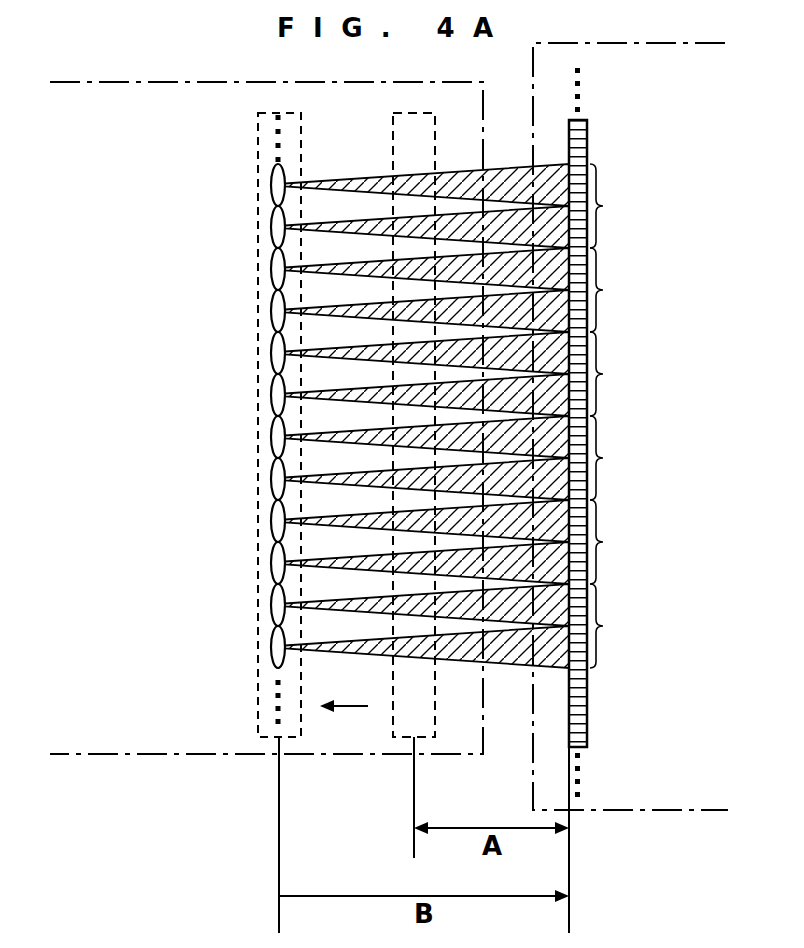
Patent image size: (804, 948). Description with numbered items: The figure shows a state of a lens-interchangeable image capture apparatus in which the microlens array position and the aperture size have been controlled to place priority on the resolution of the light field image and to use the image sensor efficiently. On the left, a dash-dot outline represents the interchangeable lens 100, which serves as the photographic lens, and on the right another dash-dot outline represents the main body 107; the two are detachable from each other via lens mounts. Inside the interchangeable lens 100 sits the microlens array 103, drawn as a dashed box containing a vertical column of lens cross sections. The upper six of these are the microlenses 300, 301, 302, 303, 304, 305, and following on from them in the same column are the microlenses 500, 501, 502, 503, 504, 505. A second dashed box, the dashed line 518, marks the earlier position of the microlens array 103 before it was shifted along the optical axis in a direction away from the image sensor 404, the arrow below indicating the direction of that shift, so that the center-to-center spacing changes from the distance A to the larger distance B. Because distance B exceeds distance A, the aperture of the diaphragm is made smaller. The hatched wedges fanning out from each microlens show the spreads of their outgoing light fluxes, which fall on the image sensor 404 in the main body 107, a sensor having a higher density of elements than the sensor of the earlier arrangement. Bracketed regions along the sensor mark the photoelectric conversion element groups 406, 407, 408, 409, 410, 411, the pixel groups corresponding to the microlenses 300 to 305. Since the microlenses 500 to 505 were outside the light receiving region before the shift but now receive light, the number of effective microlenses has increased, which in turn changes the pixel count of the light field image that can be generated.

The interchangeable lens 100 is at (163, 757).
The main body 107 is at (670, 813).
The microlens array 103 is at (258, 125).
The dashed line 518 is at (393, 128).
The microlens 300 is at (272, 177).
The microlens 301 is at (272, 219).
The microlens 302 is at (272, 261).
The microlens 303 is at (272, 303).
The microlens 304 is at (272, 345).
The microlens 305 is at (272, 387).
The microlens 500 is at (272, 429).
The microlens 501 is at (272, 471).
The microlens 502 is at (272, 513).
The microlens 503 is at (272, 555).
The microlens 504 is at (272, 597).
The microlens 505 is at (272, 639).
The image sensor 404 is at (588, 141).
The photoelectric conversion element group 406 is at (628, 206).
The photoelectric conversion element group 407 is at (628, 290).
The photoelectric conversion element group 408 is at (628, 374).
The photoelectric conversion element group 409 is at (628, 458).
The photoelectric conversion element group 410 is at (628, 542).
The photoelectric conversion element group 411 is at (628, 626).